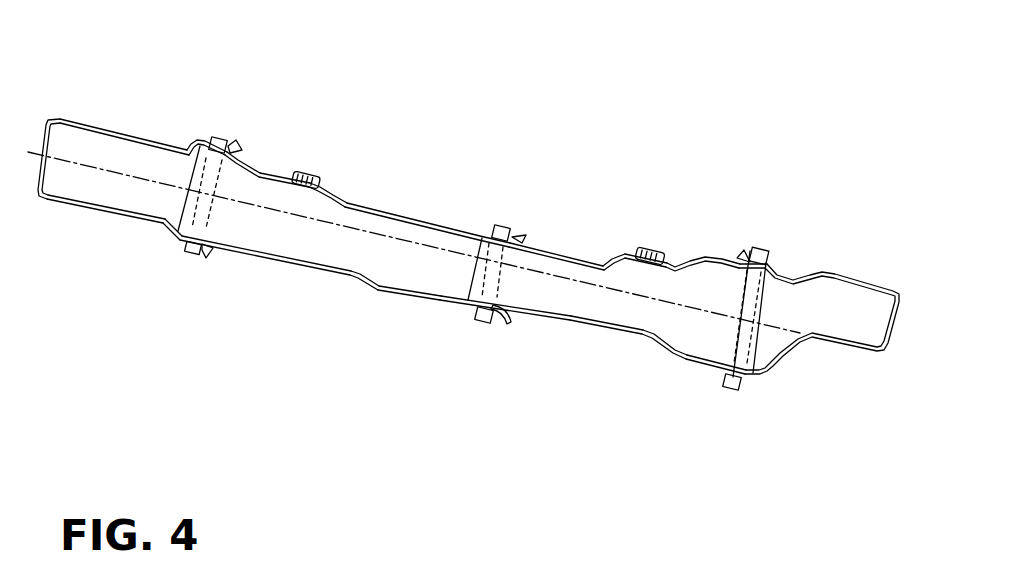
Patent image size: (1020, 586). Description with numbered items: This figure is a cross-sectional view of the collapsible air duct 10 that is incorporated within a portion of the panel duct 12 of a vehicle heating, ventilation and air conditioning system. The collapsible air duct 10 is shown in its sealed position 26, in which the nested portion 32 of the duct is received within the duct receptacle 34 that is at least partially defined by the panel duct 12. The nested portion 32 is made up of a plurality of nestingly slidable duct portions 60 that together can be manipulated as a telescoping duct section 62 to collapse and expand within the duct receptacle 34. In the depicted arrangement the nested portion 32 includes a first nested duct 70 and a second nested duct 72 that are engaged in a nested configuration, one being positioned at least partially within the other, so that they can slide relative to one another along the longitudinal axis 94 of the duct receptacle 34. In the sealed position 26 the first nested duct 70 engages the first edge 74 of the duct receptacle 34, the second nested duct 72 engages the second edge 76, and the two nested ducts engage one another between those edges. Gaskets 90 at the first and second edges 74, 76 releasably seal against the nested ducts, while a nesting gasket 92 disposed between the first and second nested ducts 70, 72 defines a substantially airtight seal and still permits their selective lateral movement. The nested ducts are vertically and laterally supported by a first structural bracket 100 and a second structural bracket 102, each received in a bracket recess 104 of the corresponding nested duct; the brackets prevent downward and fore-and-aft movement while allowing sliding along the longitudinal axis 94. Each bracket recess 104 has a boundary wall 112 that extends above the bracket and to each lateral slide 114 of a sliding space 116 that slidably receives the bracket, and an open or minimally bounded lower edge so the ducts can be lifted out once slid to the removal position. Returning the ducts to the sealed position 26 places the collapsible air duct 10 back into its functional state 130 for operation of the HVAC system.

The collapsible air duct 10 is at (463, 92).
The panel duct 12 is at (117, 108).
The sealed position 26 is at (403, 333).
The nested portion 32 is at (515, 362).
The duct receptacle 34 is at (780, 190).
The nestingly slidable duct portions 60 is at (260, 257).
The telescoping duct section 62 is at (405, 125).
The first nested duct 70 is at (637, 338).
The second nested duct 72 is at (353, 273).
The first edge 74 is at (713, 375).
The second edge 76 is at (233, 138).
The gaskets 90 is at (762, 250).
The nesting gasket 92 is at (505, 222).
The longitudinal axis 94 is at (83, 167).
The first structural bracket 100 is at (633, 250).
The second structural bracket 102 is at (297, 172).
The bracket recess 104 is at (324, 174).
The boundary wall 112 is at (677, 247).
The lateral slide 114 is at (258, 158).
The sliding space 116 is at (652, 243).
The functional state 130 is at (461, 346).